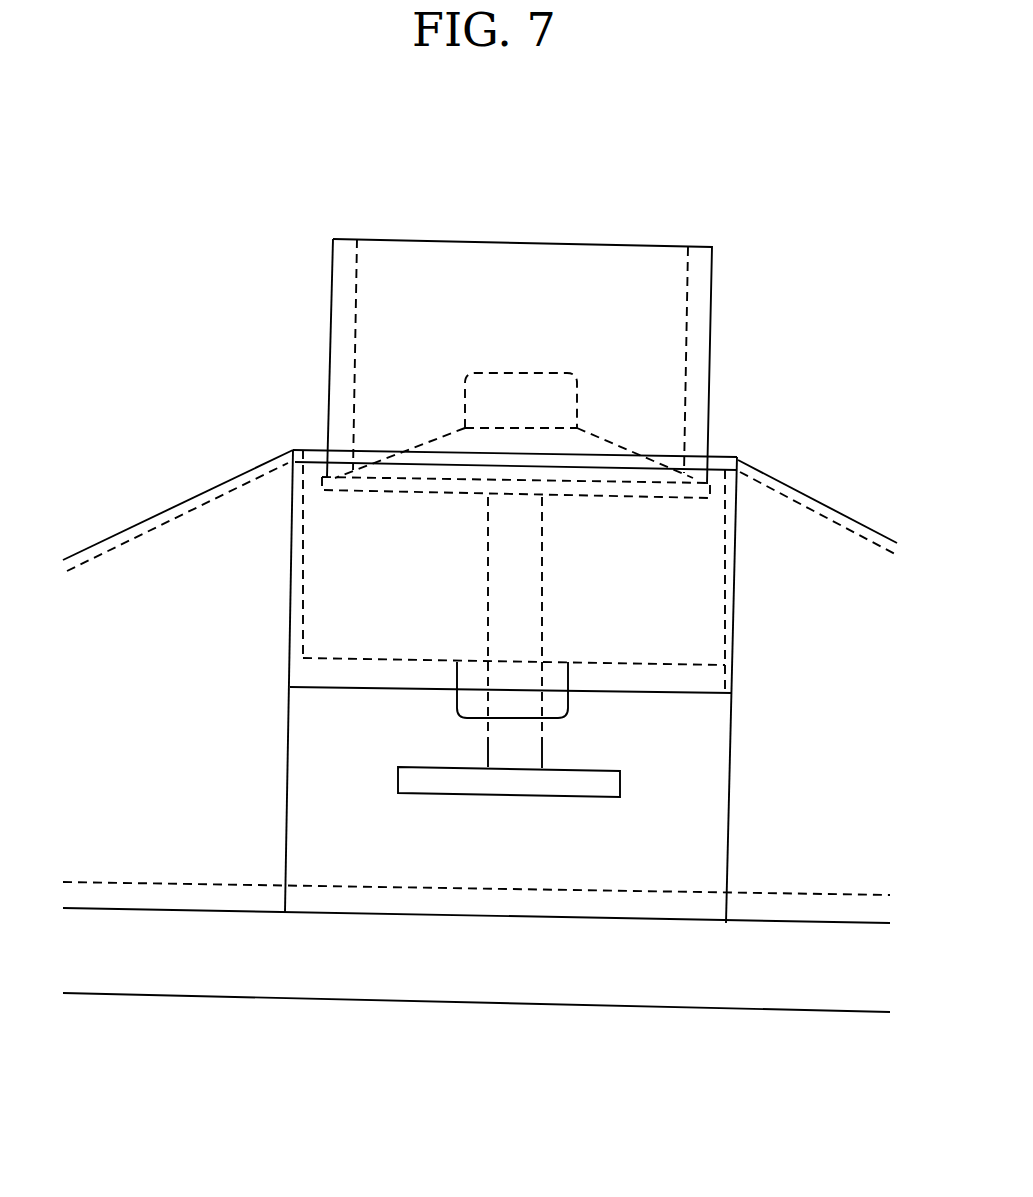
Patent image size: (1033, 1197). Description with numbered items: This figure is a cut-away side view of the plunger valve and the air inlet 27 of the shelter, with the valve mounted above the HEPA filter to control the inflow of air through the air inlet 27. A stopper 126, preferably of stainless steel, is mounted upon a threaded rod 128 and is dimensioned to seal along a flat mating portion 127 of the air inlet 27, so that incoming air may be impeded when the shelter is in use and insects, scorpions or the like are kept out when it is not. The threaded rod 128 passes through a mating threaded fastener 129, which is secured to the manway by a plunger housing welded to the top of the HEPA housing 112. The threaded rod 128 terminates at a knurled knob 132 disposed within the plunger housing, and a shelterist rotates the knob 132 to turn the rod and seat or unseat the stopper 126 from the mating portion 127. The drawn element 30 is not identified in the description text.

The upper housing 27 is at (342, 333).
The lower housing 30 is at (738, 458).
The roof panel 112 is at (205, 485).
The mounting post 126 is at (495, 440).
The bracket plate 127 is at (343, 478).
The shaft 128 is at (527, 598).
The socket 129 is at (555, 690).
The base plate 132 is at (605, 792).